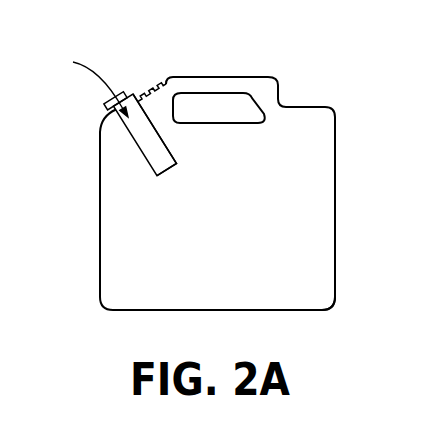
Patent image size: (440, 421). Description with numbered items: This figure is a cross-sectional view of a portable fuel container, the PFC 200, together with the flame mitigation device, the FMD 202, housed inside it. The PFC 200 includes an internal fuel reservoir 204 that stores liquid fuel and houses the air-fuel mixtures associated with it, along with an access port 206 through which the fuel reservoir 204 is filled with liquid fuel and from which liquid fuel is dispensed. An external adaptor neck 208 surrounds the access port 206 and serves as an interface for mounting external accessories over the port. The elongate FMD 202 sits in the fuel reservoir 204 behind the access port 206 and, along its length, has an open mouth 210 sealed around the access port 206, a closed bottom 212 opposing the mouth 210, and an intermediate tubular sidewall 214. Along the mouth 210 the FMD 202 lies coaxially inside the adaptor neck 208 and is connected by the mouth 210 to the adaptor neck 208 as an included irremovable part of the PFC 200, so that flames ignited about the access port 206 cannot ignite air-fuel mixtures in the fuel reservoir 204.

The PFC 200 is at (338, 118).
The FMD 202 is at (130, 92).
The fuel reservoir 204 is at (322, 297).
The access port 206 is at (82, 83).
The adaptor neck 208 is at (110, 108).
The mouth 210 is at (136, 92).
The closed bottom 212 is at (174, 158).
The sidewall 214 is at (149, 120).